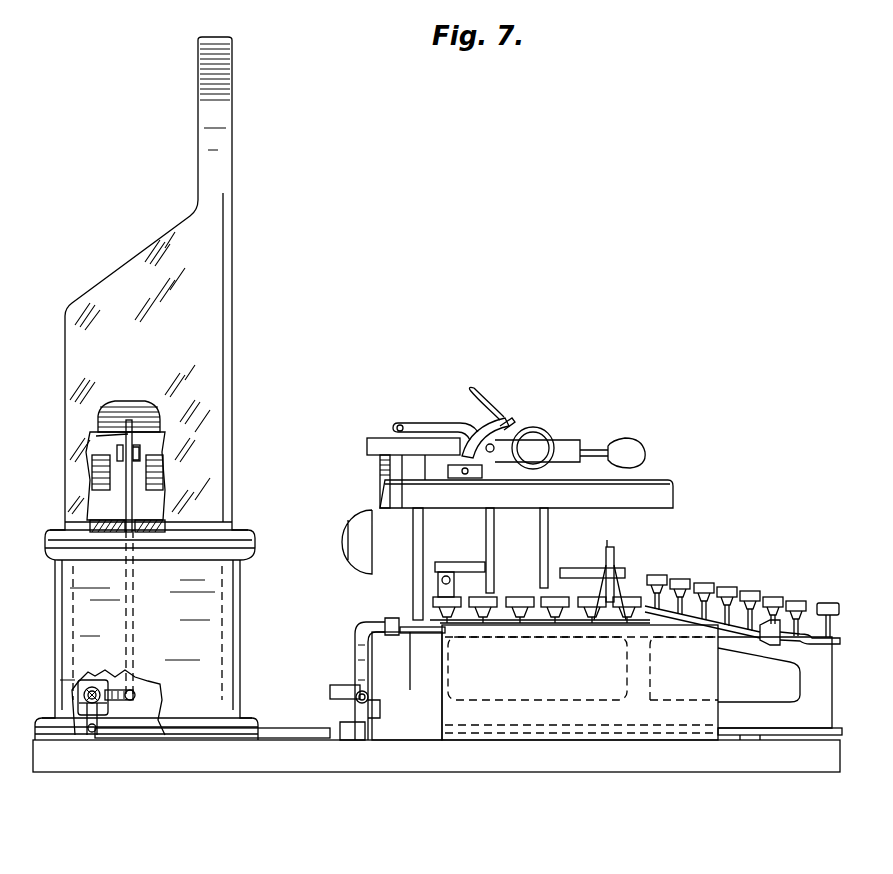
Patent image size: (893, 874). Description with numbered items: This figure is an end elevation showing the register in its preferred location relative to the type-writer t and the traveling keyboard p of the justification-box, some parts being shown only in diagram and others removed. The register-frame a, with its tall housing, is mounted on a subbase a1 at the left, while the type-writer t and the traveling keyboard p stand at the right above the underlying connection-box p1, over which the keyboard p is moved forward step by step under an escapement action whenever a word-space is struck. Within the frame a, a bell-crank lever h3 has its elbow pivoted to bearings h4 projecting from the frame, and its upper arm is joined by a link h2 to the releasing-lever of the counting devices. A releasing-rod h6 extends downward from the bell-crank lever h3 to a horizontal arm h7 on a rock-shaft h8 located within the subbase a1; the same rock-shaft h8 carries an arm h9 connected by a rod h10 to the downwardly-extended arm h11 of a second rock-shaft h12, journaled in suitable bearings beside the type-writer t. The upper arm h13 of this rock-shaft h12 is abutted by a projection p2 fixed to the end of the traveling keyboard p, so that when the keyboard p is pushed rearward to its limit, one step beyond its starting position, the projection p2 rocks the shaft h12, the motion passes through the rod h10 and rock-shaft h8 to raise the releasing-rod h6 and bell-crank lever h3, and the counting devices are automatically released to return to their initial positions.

The fixed frame a is at (213, 424).
The subbase a1 is at (232, 646).
The link h2 is at (130, 420).
The bell-crank lever h3 is at (96, 436).
The bearings h4 is at (142, 453).
The releasing-rod h6 is at (140, 684).
The horizontal arm h7 is at (118, 700).
The rock-shaft h8 is at (93, 688).
The arm h9 is at (88, 720).
The rod h10 is at (288, 736).
The downwardly-extended arm h11 is at (356, 717).
The rock-shaft h12 is at (372, 700).
The upper arm h13 is at (365, 628).
The traveling keyboard p is at (435, 610).
The connection-box p1 is at (570, 723).
The projection p2 is at (388, 683).
The type-writer t is at (637, 503).